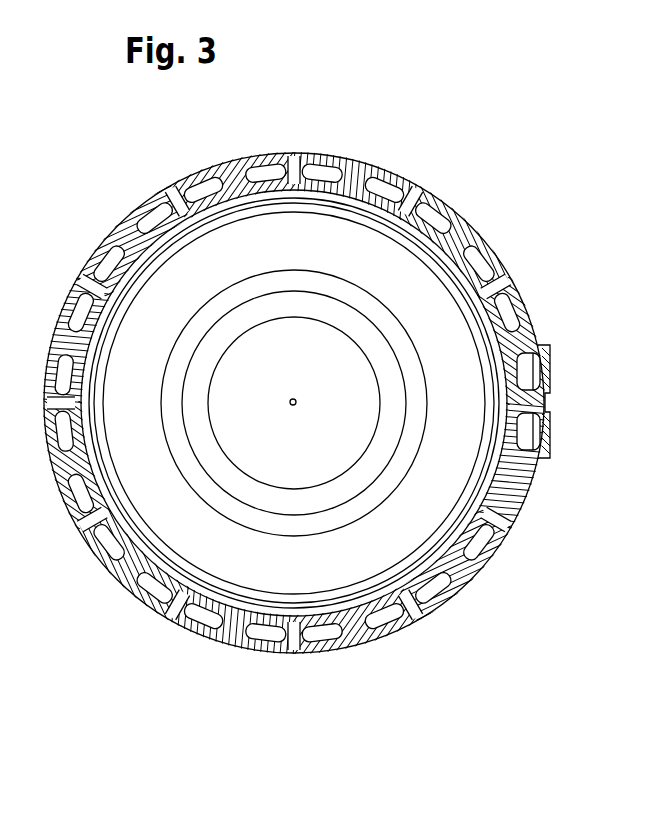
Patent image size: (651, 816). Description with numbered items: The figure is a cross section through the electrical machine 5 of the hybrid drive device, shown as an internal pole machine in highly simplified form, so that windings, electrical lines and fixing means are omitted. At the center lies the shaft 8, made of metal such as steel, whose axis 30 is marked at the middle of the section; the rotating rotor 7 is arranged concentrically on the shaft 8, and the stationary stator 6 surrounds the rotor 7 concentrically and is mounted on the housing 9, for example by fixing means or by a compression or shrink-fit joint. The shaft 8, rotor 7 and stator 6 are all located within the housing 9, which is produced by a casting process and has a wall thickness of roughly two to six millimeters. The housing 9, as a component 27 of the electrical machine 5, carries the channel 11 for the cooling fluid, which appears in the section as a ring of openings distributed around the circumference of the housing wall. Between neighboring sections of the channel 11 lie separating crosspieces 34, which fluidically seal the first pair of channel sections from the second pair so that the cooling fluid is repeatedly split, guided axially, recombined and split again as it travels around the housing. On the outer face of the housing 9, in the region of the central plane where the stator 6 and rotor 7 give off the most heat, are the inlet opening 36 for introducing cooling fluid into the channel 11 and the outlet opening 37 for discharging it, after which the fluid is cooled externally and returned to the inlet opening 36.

The electrical machine 5 is at (166, 666).
The stator 6 is at (272, 560).
The rotor 7 is at (327, 493).
The shaft 8 is at (279, 448).
The housing 9 is at (247, 168).
The component 27 is at (125, 232).
The channel 11 is at (80, 310).
The axis 30 is at (298, 398).
The separating crosspiece 34 is at (297, 163).
The inlet opening 36 is at (525, 434).
The outlet opening 37 is at (541, 366).